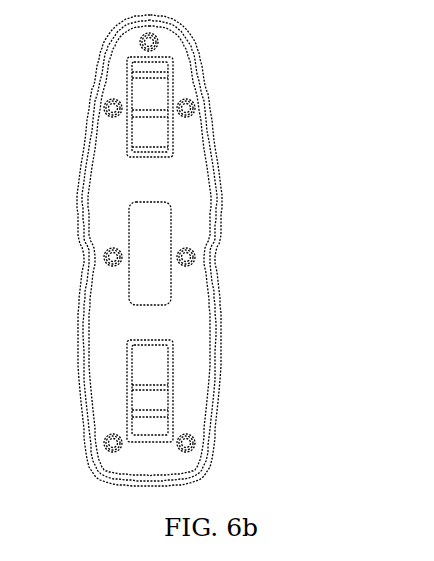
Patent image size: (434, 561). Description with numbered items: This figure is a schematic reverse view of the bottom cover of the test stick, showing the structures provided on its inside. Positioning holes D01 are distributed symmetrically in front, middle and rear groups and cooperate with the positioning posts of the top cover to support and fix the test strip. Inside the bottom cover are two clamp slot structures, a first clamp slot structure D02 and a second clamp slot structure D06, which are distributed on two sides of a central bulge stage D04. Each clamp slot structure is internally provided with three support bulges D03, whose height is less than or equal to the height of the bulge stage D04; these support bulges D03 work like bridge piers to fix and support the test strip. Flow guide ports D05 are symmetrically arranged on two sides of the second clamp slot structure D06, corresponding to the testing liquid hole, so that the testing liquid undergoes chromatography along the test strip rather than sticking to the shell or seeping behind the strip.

The positioning hole D01 is at (158, 42).
The first clamp slot structure D02 is at (155, 91).
The support bulge D03 is at (132, 153).
The bulge stage D04 is at (150, 243).
The flow guide port D05 is at (173, 363).
The second clamp slot structure D06 is at (132, 415).